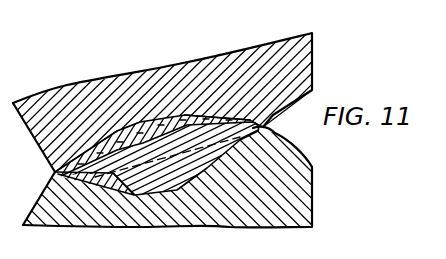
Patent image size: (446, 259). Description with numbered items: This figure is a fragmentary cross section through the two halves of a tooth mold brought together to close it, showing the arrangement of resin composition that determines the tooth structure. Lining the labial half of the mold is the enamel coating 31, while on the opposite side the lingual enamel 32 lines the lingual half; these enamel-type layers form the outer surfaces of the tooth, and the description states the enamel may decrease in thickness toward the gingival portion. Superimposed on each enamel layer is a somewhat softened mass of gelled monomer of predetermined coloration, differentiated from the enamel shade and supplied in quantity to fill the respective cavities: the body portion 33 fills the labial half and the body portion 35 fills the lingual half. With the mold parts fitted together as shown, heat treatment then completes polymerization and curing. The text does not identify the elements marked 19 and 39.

The upper member 19 is at (160, 70).
The enamel coating of the labial half of the mold 31 is at (120, 135).
The lingual enamel 32 is at (98, 173).
The body portion of the labial half 33 is at (182, 125).
The body portion of the lingual half 35 is at (192, 163).
The edge 39 is at (220, 118).